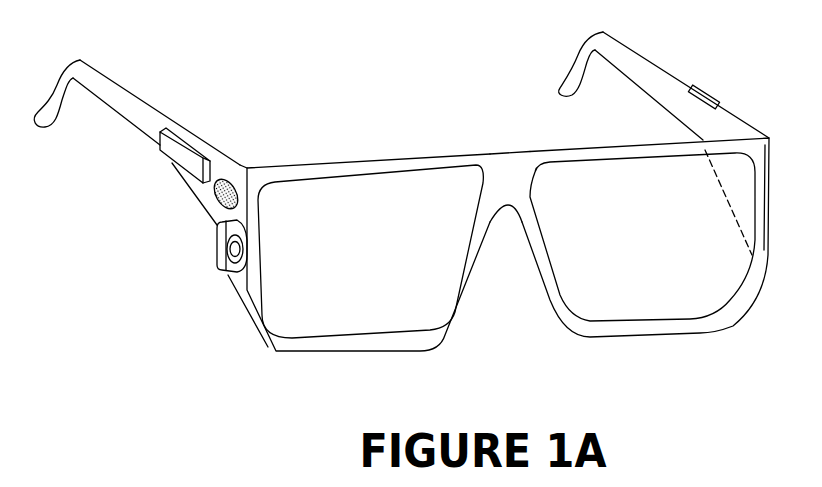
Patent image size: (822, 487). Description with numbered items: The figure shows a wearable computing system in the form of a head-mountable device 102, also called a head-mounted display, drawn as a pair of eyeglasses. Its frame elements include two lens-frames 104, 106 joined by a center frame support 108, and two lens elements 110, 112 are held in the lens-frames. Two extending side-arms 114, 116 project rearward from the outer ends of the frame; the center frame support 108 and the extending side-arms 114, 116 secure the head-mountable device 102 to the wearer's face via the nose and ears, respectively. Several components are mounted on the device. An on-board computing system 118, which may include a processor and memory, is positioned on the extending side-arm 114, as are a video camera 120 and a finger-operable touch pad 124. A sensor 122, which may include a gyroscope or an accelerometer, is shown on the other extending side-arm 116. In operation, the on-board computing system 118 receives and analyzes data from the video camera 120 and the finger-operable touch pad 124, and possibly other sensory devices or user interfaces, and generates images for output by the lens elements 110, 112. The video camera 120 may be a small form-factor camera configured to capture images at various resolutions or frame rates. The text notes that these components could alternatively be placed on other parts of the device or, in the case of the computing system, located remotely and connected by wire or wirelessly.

The head-mountable device 102 is at (356, 73).
The lens-frame 104 is at (338, 168).
The lens-frame 106 is at (575, 152).
The center frame support 108 is at (507, 175).
The lens element 110 is at (315, 317).
The lens element 112 is at (662, 300).
The extending side-arm 114 is at (180, 130).
The extending side-arm 116 is at (667, 73).
The on-board computing system 118 is at (177, 153).
The video camera 120 is at (217, 238).
The sensor 122 is at (708, 92).
The finger-operable touch pad 124 is at (215, 192).